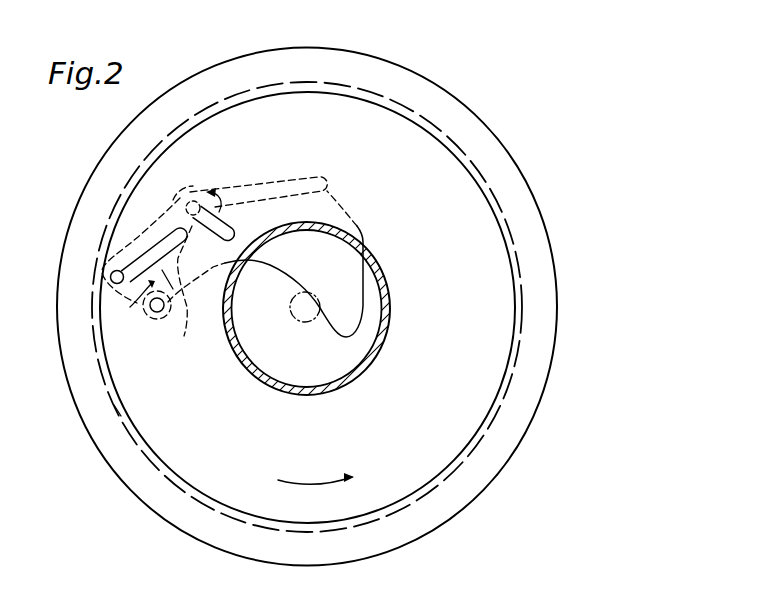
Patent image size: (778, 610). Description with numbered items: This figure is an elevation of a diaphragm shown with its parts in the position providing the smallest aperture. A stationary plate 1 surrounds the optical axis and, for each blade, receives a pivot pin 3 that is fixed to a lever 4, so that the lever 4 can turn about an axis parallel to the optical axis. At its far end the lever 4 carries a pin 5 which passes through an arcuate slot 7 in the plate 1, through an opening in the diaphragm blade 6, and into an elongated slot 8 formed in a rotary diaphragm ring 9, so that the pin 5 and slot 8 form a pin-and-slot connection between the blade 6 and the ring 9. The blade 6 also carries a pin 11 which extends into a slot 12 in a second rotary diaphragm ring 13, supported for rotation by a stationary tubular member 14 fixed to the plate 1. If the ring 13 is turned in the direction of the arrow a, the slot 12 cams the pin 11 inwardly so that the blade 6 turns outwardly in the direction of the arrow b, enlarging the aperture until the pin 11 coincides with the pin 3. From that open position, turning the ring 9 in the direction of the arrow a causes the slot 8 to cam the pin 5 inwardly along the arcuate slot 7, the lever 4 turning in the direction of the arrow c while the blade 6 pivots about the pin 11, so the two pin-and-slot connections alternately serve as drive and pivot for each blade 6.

The stationary plate 1 is at (72, 347).
The pivot pin 3 is at (157, 320).
The lever 4 is at (196, 289).
The pin 5 is at (193, 198).
The diaphragm blade 6 is at (302, 270).
The arcuate slot 7 is at (233, 217).
The elongated slot 8 is at (290, 180).
The rotary diaphragm ring 9 is at (118, 411).
The pin 11 is at (111, 274).
The slot 12 is at (147, 243).
The rotary diaphragm ring 13 is at (153, 440).
The stationary tubular member 14 is at (310, 390).
The arrow a is at (316, 469).
The arrow b is at (217, 203).
The arrow c is at (131, 308).